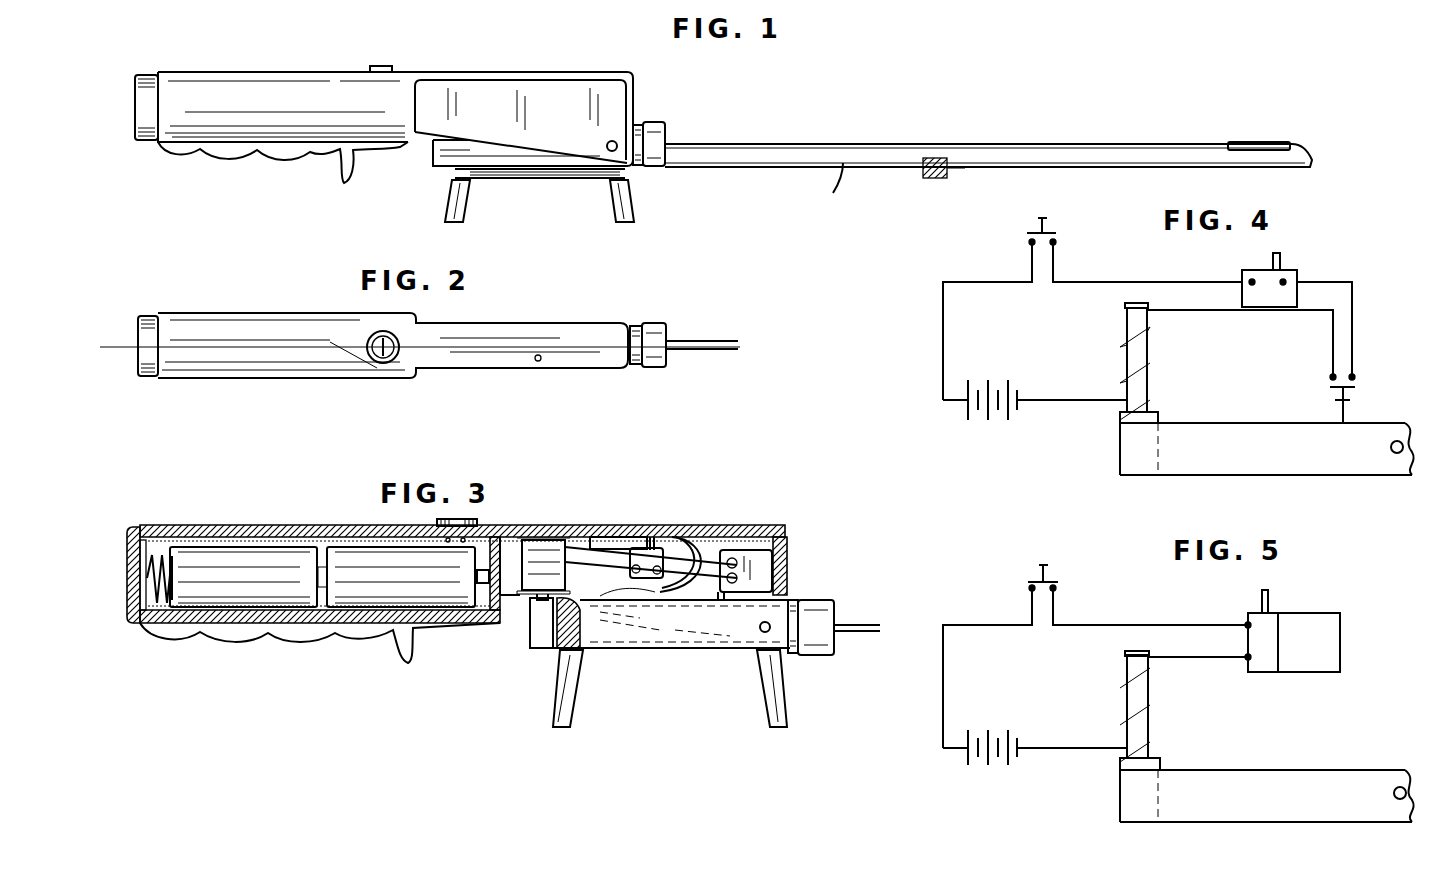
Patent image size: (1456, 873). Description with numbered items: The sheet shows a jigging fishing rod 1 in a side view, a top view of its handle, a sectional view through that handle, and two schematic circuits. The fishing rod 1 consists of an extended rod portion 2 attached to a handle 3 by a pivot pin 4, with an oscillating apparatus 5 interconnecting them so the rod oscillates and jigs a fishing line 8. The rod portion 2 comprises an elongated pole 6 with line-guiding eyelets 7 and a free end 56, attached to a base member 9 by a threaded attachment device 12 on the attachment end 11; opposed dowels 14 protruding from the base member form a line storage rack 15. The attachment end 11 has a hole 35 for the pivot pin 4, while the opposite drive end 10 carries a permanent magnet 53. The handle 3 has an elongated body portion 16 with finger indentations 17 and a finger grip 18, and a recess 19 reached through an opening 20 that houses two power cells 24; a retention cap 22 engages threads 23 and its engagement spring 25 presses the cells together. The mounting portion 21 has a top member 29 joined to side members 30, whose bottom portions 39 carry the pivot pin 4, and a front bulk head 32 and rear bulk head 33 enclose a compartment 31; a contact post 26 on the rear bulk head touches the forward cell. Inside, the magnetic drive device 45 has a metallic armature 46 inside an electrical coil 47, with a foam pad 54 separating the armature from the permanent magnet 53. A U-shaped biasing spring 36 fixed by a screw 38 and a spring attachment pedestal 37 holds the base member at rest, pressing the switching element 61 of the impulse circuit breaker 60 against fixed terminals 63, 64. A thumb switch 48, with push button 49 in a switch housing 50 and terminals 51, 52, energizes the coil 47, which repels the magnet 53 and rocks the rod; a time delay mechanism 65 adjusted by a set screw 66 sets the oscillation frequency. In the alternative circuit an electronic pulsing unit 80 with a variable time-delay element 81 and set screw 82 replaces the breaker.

In FIG. 1, the fishing rod 1 is at (840, 92).
In FIG. 2, the fishing rod 1 is at (628, 305).
In FIG. 3, the fishing rod 1 is at (812, 523).
In FIG. 1, the extended rod portion 2 is at (896, 143).
In FIG. 2, the extended rod portion 2 is at (708, 340).
In FIG. 3, the extended rod portion 2 is at (866, 624).
In FIG. 1, the handle 3 is at (222, 70).
In FIG. 2, the handle 3 is at (234, 312).
In FIG. 3, the handle 3 is at (258, 524).
In FIG. 1, the pivot pin 4 is at (606, 146).
In FIG. 3, the pivot pin 4 is at (760, 630).
In FIG. 4, the pivot pin 4 is at (1395, 453).
In FIG. 5, the pivot pin 4 is at (1398, 800).
In FIG. 3, the oscillating apparatus 5 is at (720, 540).
In FIG. 1, the elongated pole 6 is at (972, 145).
In FIG. 2, the elongated pole 6 is at (732, 346).
In FIG. 3, the elongated pole 6 is at (880, 628).
In FIG. 1, the line-guiding eyelets 7 is at (1314, 158).
In FIG. 1, the fishing line 8 is at (550, 180).
In FIG. 1, the base member 9 is at (526, 176).
In FIG. 2, the base member 9 is at (634, 366).
In FIG. 3, the base member 9 is at (664, 650).
In FIG. 4, the base member 9 is at (1278, 452).
In FIG. 5, the base member 9 is at (1266, 814).
In FIG. 1, the drive end 10 is at (446, 155).
In FIG. 3, the drive end 10 is at (556, 652).
In FIG. 4, the drive end 10 is at (1120, 476).
In FIG. 5, the drive end 10 is at (1120, 824).
In FIG. 1, the attachment end 11 is at (645, 100).
In FIG. 2, the attachment end 11 is at (637, 325).
In FIG. 3, the attachment end 11 is at (792, 598).
In FIG. 4, the attachment end 11 is at (1410, 478).
In FIG. 5, the attachment end 11 is at (1406, 775).
In FIG. 1, the attachment device 12 is at (660, 126).
In FIG. 2, the attachment device 12 is at (658, 326).
In FIG. 3, the attachment device 12 is at (825, 600).
In FIG. 1, the dowels 14 is at (456, 223).
In FIG. 3, the dowels 14 is at (556, 714).
In FIG. 1, the line storage rack 15 is at (446, 225).
In FIG. 3, the line storage rack 15 is at (553, 730).
In FIG. 1, the elongated body portion 16 is at (272, 88).
In FIG. 2, the elongated body portion 16 is at (272, 330).
In FIG. 3, the elongated body portion 16 is at (298, 525).
In FIG. 1, the finger indentations 17 is at (258, 152).
In FIG. 3, the finger indentations 17 is at (218, 632).
In FIG. 1, the finger grip 18 is at (342, 182).
In FIG. 3, the finger grip 18 is at (406, 662).
In FIG. 3, the recess 19 is at (233, 607).
In FIG. 3, the opening 20 is at (127, 615).
In FIG. 1, the mounting portion 21 is at (520, 70).
In FIG. 2, the mounting portion 21 is at (524, 323).
In FIG. 3, the mounting portion 21 is at (692, 523).
In FIG. 1, the retention cap 22 is at (142, 141).
In FIG. 2, the retention cap 22 is at (143, 378).
In FIG. 3, the retention cap 22 is at (128, 625).
In FIG. 3, the threads 23 is at (143, 540).
In FIG. 3, the power cells 24 is at (320, 608).
In FIG. 4, the power cells 24 is at (972, 422).
In FIG. 5, the power cells 24 is at (972, 768).
In FIG. 3, the engagement spring 25 is at (165, 580).
In FIG. 3, the contact post 26 is at (478, 580).
In FIG. 1, the top member 29 is at (575, 70).
In FIG. 2, the top member 29 is at (480, 340).
In FIG. 1, the side members 30 is at (470, 90).
In FIG. 2, the side members 30 is at (558, 322).
In FIG. 3, the side members 30 is at (800, 518).
In FIG. 3, the compartment 31 is at (753, 540).
In FIG. 1, the front bulk head 32 is at (632, 90).
In FIG. 2, the front bulk head 32 is at (632, 345).
In FIG. 3, the front bulk head 32 is at (788, 550).
In FIG. 3, the rear bulk head 33 is at (496, 625).
In FIG. 3, the hole 35 is at (770, 632).
In FIG. 4, the hole 35 is at (1397, 441).
In FIG. 5, the hole 35 is at (1398, 787).
In FIG. 3, the biasing spring 36 is at (652, 537).
In FIG. 3, the spring attachment pedestal 37 is at (600, 537).
In FIG. 3, the screw 38 is at (650, 594).
In FIG. 1, the bottom portion 39 is at (627, 170).
In FIG. 3, the bottom portion 39 is at (745, 688).
In FIG. 3, the magnetic drive device 45 is at (572, 585).
In FIG. 4, the magnetic drive device 45 is at (1122, 355).
In FIG. 5, the magnetic drive device 45 is at (1122, 702).
In FIG. 3, the metallic armature 46 is at (542, 594).
In FIG. 4, the metallic armature 46 is at (1130, 322).
In FIG. 5, the metallic armature 46 is at (1130, 668).
In FIG. 3, the electrical coil 47 is at (540, 538).
In FIG. 4, the electrical coil 47 is at (1147, 366).
In FIG. 5, the electrical coil 47 is at (1148, 713).
In FIG. 1, the thumb switch 48 is at (374, 66).
In FIG. 2, the thumb switch 48 is at (384, 336).
In FIG. 3, the thumb switch 48 is at (440, 519).
In FIG. 4, the thumb switch 48 is at (1047, 226).
In FIG. 5, the thumb switch 48 is at (1048, 575).
In FIG. 1, the push button 49 is at (389, 66).
In FIG. 2, the push button 49 is at (372, 338).
In FIG. 3, the push button 49 is at (462, 519).
In FIG. 4, the push button 49 is at (1040, 229).
In FIG. 5, the push button 49 is at (1040, 575).
In FIG. 1, the switch housing 50 is at (396, 72).
In FIG. 2, the switch housing 50 is at (398, 340).
In FIG. 3, the switch housing 50 is at (480, 523).
In FIG. 3, the terminal 51 is at (448, 542).
In FIG. 4, the terminal 51 is at (1029, 243).
In FIG. 5, the terminal 51 is at (1029, 589).
In FIG. 3, the terminal 52 is at (463, 542).
In FIG. 4, the terminal 52 is at (1056, 243).
In FIG. 5, the terminal 52 is at (1056, 589).
In FIG. 3, the permanent magnet 53 is at (538, 645).
In FIG. 4, the permanent magnet 53 is at (1120, 424).
In FIG. 5, the permanent magnet 53 is at (1120, 770).
In FIG. 3, the foam pad 54 is at (575, 612).
In FIG. 4, the foam pad 54 is at (1158, 416).
In FIG. 5, the foam pad 54 is at (1160, 764).
In FIG. 1, the free end 56 is at (1230, 142).
In FIG. 3, the impulse circuit breaker 60 is at (788, 565).
In FIG. 4, the impulse circuit breaker 60 is at (1325, 388).
In FIG. 3, the switching element 61 is at (721, 600).
In FIG. 4, the switching element 61 is at (1347, 396).
In FIG. 4, the fixed terminal 63 is at (1330, 377).
In FIG. 4, the fixed terminal 64 is at (1355, 377).
In FIG. 3, the time delay mechanism 65 is at (700, 594).
In FIG. 4, the time delay mechanism 65 is at (1242, 297).
In FIG. 2, the set screw 66 is at (536, 362).
In FIG. 3, the set screw 66 is at (646, 537).
In FIG. 4, the set screw 66 is at (1282, 262).
In FIG. 5, the electronic pulsing unit 80 is at (1325, 613).
In FIG. 5, the variable time-delay element 81 is at (1260, 665).
In FIG. 5, the set screw 82 is at (1270, 605).